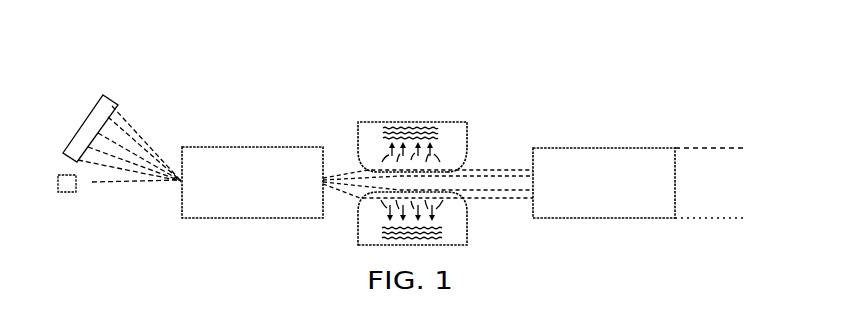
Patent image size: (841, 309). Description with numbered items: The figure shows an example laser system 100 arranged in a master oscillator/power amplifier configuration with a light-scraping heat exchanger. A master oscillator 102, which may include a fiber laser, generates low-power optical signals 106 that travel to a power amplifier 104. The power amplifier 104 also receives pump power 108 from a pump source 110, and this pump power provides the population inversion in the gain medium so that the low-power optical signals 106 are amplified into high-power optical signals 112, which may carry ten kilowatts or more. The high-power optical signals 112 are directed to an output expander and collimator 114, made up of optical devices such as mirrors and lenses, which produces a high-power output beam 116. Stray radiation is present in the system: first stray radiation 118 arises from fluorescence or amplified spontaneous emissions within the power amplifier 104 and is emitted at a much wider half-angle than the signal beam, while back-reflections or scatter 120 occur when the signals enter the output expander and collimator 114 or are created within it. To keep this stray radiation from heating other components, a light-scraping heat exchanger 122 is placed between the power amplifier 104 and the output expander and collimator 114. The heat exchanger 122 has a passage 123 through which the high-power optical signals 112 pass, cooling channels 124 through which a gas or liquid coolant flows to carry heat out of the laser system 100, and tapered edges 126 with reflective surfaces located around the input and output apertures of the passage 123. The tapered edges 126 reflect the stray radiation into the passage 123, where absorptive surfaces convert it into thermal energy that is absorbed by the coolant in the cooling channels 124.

The laser system 100 is at (492, 58).
The master oscillator 102 is at (60, 194).
The power amplifier 104 is at (252, 146).
The low-power optical signals 106 is at (121, 186).
The pump power 108 is at (155, 125).
The pump source 110 is at (83, 121).
The high-power optical signals 112 is at (487, 194).
The output expander and collimator 114 is at (605, 146).
The high-power output beam 116 is at (723, 146).
The first stray radiation 118 is at (347, 196).
The back-reflections or scatter 120 is at (485, 170).
The light-scraping heat exchanger 122 is at (397, 119).
The passage 123 is at (459, 182).
The cooling channels 124 is at (425, 119).
The tapered edges 126 is at (452, 207).